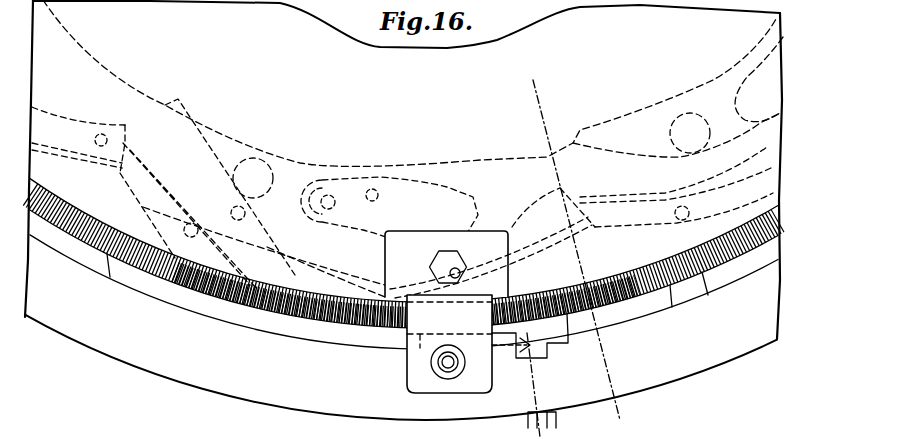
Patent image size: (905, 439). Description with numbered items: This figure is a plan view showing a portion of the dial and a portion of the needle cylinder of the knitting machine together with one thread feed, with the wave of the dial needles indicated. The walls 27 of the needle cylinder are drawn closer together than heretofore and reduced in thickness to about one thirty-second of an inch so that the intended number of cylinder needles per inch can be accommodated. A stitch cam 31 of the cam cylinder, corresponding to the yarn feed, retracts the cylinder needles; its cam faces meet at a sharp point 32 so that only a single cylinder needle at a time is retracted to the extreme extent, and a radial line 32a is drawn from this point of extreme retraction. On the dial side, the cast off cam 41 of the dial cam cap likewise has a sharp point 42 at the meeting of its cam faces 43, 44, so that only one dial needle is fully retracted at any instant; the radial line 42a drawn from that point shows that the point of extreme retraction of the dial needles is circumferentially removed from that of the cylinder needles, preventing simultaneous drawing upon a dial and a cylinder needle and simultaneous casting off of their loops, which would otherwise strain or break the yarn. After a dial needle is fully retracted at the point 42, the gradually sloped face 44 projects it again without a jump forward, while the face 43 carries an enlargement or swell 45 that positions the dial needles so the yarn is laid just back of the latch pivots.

The walls of the needle cylinder 27 is at (110, 262).
The stitch cam 31 is at (620, 313).
The sharp point of the stitch cam 32 is at (550, 358).
The radial line from point 32 32a is at (532, 388).
The cast off cam 41 is at (52, 123).
The sharp point of the cast off cam 42 is at (127, 126).
The radial line from point 42 42a is at (613, 377).
The cam face of the cast off cam 43 is at (77, 123).
The cam face of the cast off cam 44 is at (128, 126).
The enlargement or swell 45 is at (468, 233).